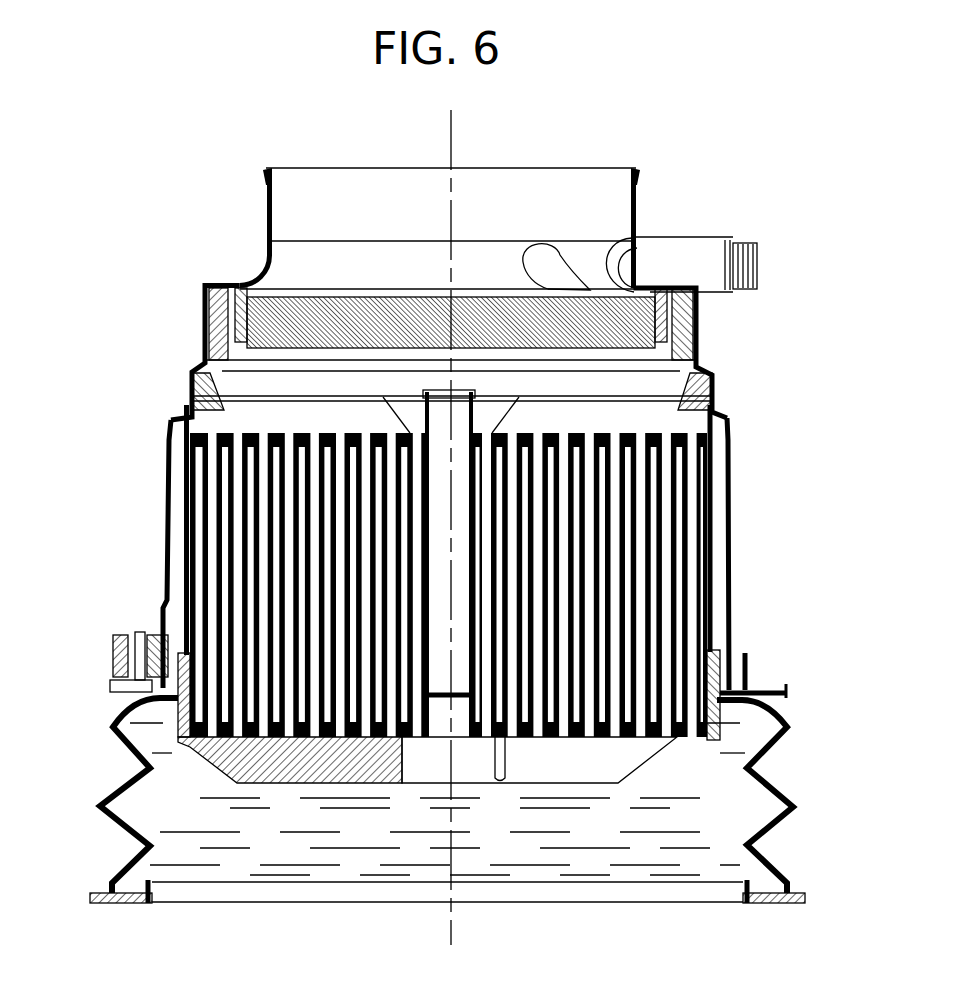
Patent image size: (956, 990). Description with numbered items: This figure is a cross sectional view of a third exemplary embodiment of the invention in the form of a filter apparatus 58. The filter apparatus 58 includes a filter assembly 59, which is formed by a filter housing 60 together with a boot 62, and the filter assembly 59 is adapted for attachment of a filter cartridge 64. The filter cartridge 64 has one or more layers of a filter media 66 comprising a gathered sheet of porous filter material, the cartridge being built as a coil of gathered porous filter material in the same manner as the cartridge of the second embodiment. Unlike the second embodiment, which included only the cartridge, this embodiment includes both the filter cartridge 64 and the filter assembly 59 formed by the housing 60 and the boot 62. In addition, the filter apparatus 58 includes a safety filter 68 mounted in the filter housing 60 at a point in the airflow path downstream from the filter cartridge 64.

The filter apparatus 58 is at (692, 211).
The filter assembly 59 is at (145, 583).
The filter housing 60 is at (700, 355).
The boot 62 is at (785, 727).
The filter cartridge 64 is at (710, 532).
The filter media 66 is at (693, 597).
The safety filter 68 is at (697, 312).